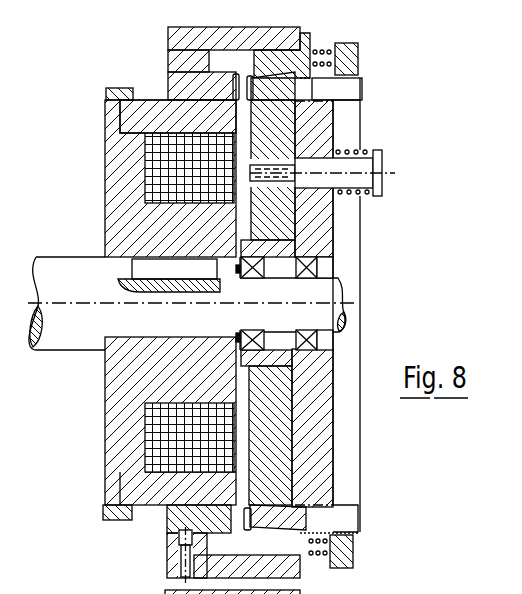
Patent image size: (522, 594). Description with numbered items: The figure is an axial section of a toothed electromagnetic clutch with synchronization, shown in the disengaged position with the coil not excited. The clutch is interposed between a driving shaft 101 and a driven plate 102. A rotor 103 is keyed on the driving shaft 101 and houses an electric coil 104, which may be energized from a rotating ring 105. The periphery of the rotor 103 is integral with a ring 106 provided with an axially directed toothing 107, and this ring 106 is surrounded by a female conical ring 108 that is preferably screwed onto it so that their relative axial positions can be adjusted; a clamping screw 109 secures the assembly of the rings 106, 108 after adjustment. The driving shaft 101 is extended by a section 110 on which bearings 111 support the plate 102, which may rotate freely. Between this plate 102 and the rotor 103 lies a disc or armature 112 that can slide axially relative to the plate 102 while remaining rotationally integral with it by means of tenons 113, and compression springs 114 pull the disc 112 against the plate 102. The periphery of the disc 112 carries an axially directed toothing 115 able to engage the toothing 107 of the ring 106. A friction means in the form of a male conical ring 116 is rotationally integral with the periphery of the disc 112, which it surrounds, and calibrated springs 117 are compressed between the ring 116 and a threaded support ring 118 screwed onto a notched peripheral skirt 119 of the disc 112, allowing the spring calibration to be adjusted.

The driving shaft 101 is at (47, 273).
The driven plate 102 is at (320, 243).
The rotor 103 is at (123, 212).
The electric coil 104 is at (153, 158).
The rotating ring 105 is at (118, 95).
The ring 106 is at (185, 105).
The axially directed toothing 107 is at (231, 85).
The female conical ring 108 is at (206, 46).
The clamping screw 109 is at (176, 557).
The section 110 is at (331, 293).
The bearings 111 is at (252, 335).
The disc or armature 112 is at (333, 138).
The tenons 113 is at (360, 183).
The compression springs 114 is at (342, 195).
The axially directed toothing 115 is at (178, 85).
The male conical ring 116 is at (292, 62).
The calibrated springs 117 is at (322, 68).
The threaded support ring 118 is at (350, 63).
The notched peripheral skirt 119 is at (355, 83).